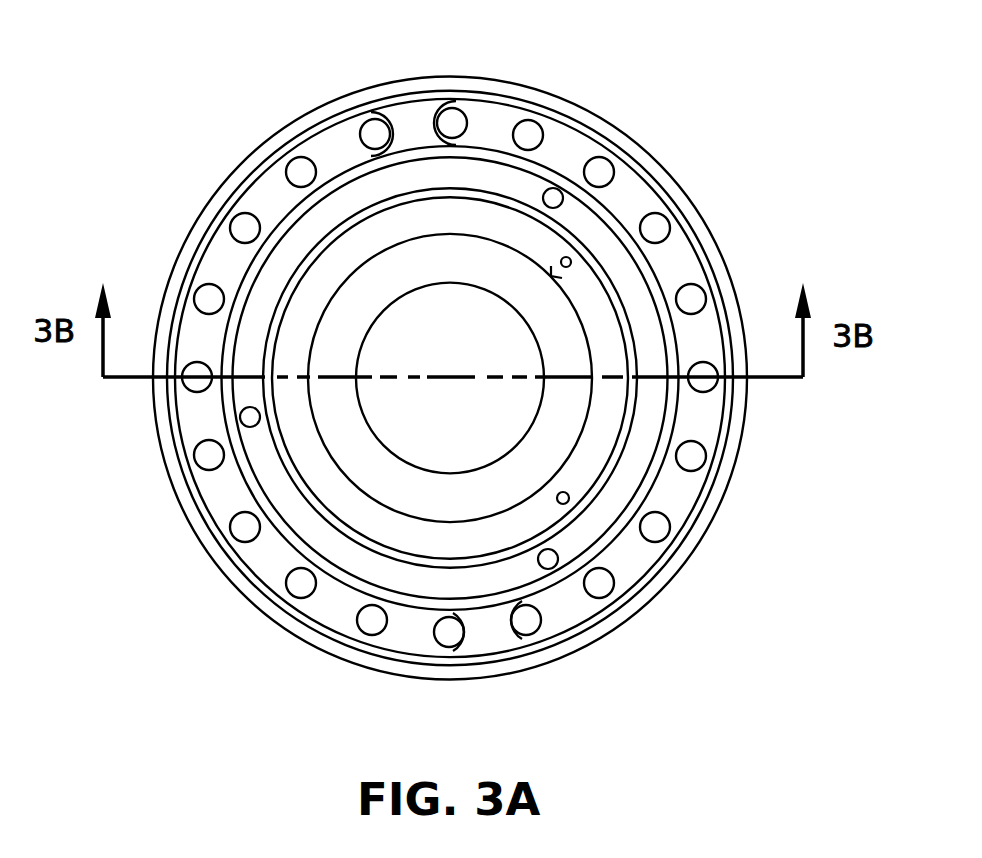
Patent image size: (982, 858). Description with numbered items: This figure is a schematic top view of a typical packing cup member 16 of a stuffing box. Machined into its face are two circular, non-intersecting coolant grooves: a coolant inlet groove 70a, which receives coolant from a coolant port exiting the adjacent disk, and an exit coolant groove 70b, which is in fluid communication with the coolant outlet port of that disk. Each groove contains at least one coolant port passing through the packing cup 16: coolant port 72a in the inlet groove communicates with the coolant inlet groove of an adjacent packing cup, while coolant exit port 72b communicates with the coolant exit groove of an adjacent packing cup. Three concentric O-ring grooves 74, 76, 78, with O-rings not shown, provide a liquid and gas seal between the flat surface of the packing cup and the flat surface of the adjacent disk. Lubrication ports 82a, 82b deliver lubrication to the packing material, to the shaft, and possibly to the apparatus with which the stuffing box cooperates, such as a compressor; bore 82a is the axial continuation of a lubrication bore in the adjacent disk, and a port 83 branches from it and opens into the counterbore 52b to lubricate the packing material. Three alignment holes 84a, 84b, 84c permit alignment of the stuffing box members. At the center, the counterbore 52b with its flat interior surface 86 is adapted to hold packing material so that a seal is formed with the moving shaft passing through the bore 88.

The packing cup member 16 is at (775, 450).
The counterbore 52b is at (386, 509).
The coolant inlet groove 70a is at (484, 117).
The exit coolant groove 70b is at (340, 147).
The coolant port 72a is at (690, 298).
The coolant exit port 72b is at (208, 453).
The O-ring groove 74 is at (688, 232).
The O-ring groove 76 is at (432, 152).
The O-ring groove 78 is at (317, 252).
The lubrication port 82a is at (568, 258).
The lubrication port 82b is at (566, 501).
The port 83 is at (566, 262).
The alignment hole 84a is at (553, 198).
The alignment hole 84b is at (548, 559).
The alignment hole 84c is at (250, 417).
The flat interior surface 86 is at (443, 502).
The bore 88 is at (463, 361).